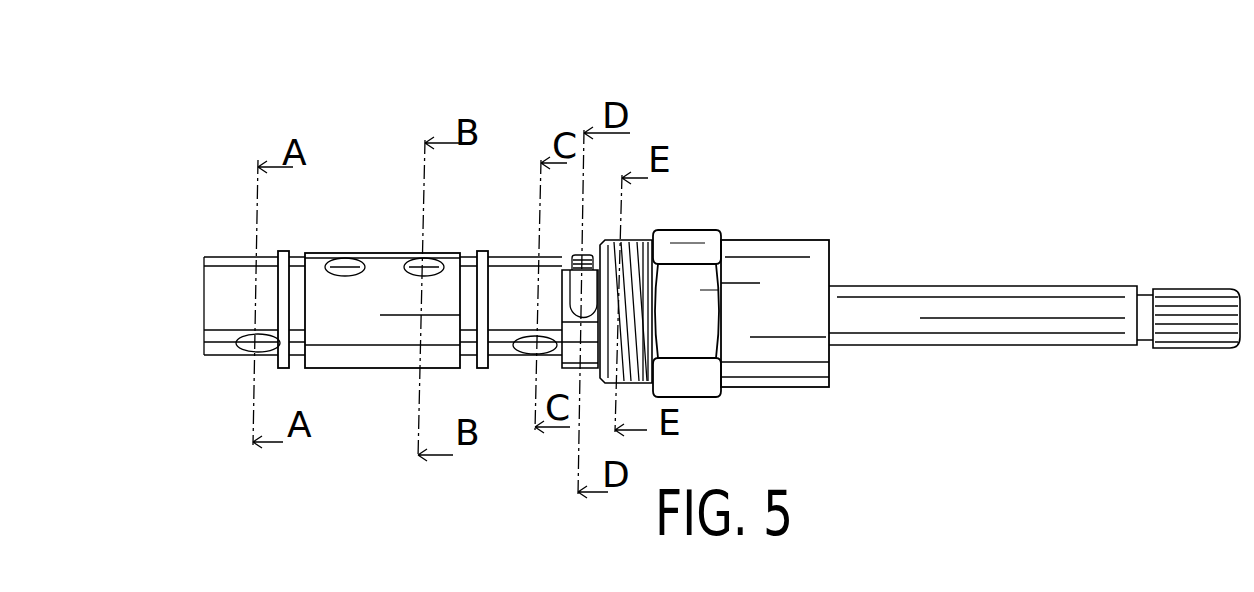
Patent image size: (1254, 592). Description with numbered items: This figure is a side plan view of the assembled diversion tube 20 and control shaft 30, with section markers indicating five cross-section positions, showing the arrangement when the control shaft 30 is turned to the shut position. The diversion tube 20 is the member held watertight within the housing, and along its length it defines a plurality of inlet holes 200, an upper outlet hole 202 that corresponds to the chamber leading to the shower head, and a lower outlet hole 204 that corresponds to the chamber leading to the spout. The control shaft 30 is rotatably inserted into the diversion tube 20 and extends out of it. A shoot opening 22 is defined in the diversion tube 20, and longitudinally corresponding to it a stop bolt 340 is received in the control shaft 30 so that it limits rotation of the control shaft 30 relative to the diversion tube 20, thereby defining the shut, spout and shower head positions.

The diversion tube 20 is at (372, 350).
The inlet holes 200 is at (412, 257).
The upper outlet hole 202 is at (245, 355).
The lower outlet hole 204 is at (528, 355).
The shoot opening 22 is at (566, 290).
The stop bolt 340 is at (592, 252).
The control shaft 30 is at (955, 297).